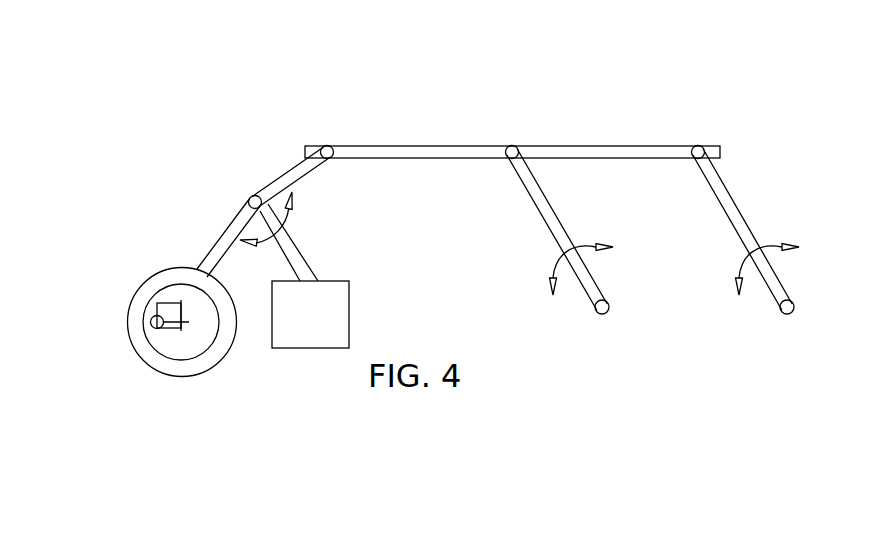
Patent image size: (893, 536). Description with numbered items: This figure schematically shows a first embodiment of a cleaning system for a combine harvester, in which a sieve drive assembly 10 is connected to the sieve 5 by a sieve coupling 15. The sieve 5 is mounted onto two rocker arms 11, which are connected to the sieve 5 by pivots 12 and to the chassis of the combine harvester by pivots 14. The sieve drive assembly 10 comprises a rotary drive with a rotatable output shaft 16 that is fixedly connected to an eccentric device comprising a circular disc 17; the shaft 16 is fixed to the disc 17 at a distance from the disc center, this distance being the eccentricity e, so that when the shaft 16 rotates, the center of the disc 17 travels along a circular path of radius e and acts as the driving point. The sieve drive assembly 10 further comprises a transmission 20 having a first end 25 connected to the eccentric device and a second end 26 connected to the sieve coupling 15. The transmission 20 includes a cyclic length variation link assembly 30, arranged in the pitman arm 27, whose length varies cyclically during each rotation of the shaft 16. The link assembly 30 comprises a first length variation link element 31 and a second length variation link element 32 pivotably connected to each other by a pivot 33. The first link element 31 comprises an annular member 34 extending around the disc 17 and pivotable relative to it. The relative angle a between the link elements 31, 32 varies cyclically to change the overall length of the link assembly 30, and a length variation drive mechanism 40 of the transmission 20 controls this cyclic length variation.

The sieve drive assembly 10 is at (115, 87).
The pitman arm 27 is at (208, 165).
The transmission 20 is at (263, 143).
The second end 26 is at (316, 137).
The first end 25 is at (122, 258).
The sieve 5 is at (638, 147).
The pivots 12 is at (513, 146).
The sieve coupling 15 is at (328, 146).
The rocker arms 11 is at (556, 232).
The pivots 14 is at (595, 310).
The pivot 33 is at (251, 196).
The cyclic length variation link assembly 30 is at (222, 231).
The second length variation link element 32 is at (303, 172).
The first length variation link element 31 is at (221, 257).
The length variation drive mechanism 40 is at (360, 268).
The annular member 34 is at (219, 356).
The circular disc 17 is at (188, 356).
The eccentricity e is at (168, 303).
The rotatable output shaft 16 is at (150, 325).
The relative angle a is at (173, 329).